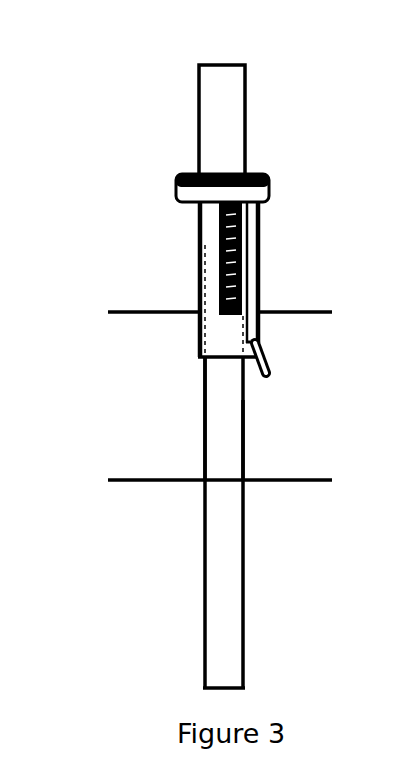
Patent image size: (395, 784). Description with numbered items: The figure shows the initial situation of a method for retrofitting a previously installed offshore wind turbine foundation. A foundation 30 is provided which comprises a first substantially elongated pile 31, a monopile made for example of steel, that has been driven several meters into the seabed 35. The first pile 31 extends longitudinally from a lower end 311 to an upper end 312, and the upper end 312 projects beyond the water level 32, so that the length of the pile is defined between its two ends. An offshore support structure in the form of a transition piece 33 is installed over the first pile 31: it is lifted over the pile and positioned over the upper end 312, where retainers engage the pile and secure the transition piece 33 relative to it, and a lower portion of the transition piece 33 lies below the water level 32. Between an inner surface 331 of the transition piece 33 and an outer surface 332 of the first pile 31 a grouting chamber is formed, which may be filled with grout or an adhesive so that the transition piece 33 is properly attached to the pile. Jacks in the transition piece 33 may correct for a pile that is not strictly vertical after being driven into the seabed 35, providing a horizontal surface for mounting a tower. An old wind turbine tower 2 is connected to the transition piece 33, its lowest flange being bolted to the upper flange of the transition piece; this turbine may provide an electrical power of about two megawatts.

The wind turbine tower 2 is at (237, 92).
The foundation 30 is at (127, 443).
The first pile 31 is at (203, 560).
The lower end 311 is at (201, 683).
The upper end 312 is at (214, 247).
The water level 32 is at (292, 308).
The transition piece 33 is at (177, 187).
The inner surface 331 is at (201, 340).
The outer surface 332 is at (203, 398).
The seabed 35 is at (285, 476).